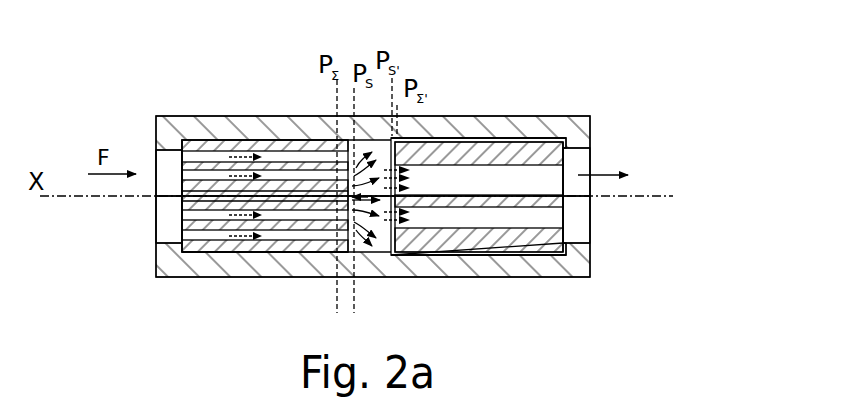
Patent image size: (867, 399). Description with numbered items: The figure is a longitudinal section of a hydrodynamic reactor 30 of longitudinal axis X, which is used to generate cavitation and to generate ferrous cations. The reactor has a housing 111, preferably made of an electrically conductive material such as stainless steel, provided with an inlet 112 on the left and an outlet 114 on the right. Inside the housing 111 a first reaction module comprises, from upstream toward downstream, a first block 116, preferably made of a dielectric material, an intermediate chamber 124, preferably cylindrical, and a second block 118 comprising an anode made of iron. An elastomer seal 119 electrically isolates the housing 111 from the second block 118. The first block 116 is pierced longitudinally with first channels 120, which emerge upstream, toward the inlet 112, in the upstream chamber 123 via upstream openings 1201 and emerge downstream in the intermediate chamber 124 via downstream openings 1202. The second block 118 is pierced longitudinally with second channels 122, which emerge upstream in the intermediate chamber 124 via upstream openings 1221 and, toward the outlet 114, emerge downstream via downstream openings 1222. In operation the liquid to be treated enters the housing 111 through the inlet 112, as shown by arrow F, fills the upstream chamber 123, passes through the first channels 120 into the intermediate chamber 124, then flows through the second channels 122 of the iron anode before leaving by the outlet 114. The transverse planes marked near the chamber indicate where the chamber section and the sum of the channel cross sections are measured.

The hydrodynamic reactor 30 is at (588, 80).
The housing 111 is at (256, 116).
The inlet 112 is at (165, 212).
The outlet 114 is at (580, 212).
The first block 116 is at (228, 249).
The second block 118 is at (453, 243).
The elastomer seal 119 is at (503, 140).
The first channels 120 is at (276, 233).
The upstream openings of the first channels 1201 is at (192, 238).
The downstream openings of the first channels 1202 is at (341, 233).
The second channels 122 is at (503, 223).
The upstream openings of the second channels 1221 is at (397, 238).
The downstream openings of the second channels 1222 is at (553, 225).
The upstream chamber 123 is at (165, 239).
The intermediate chamber 124 is at (388, 168).